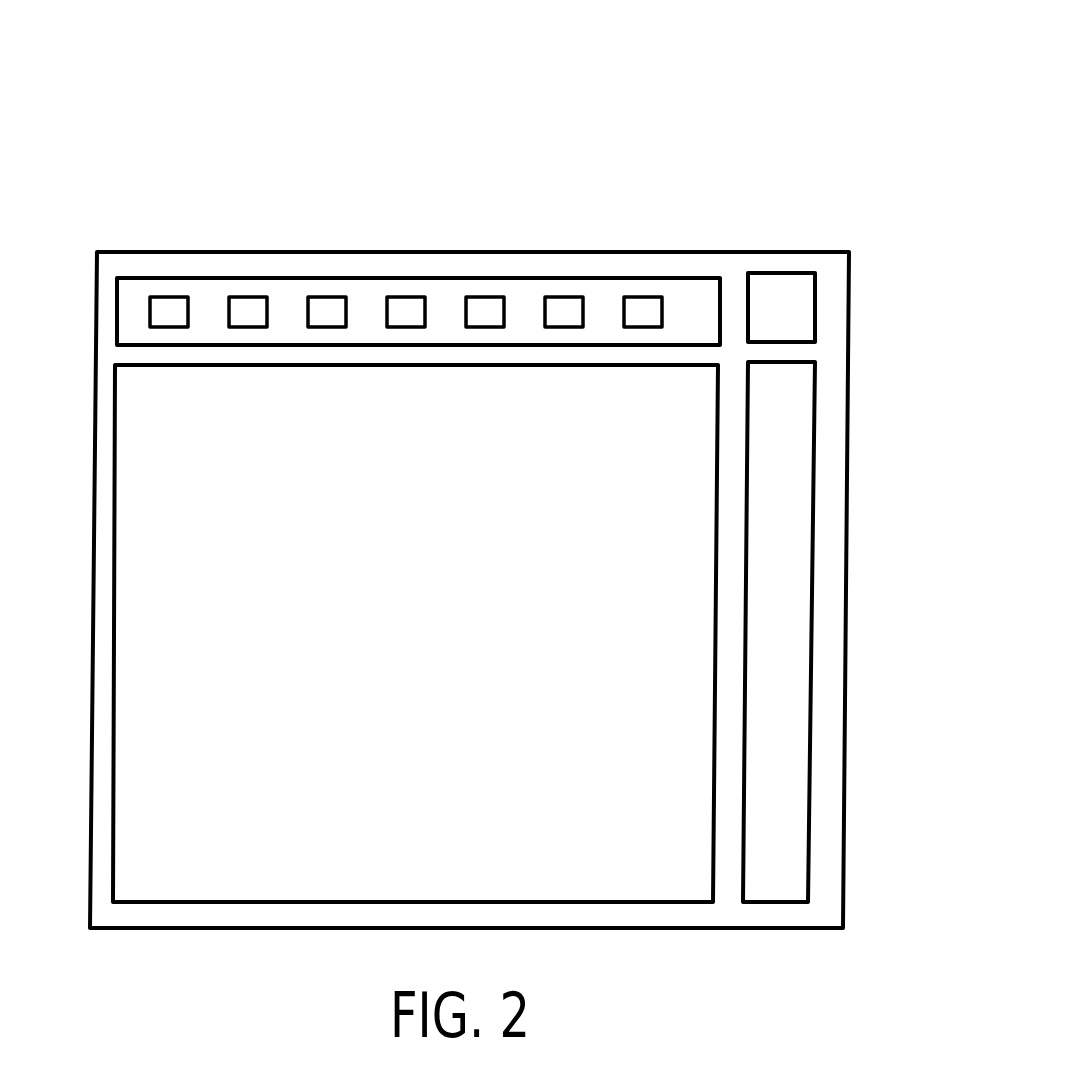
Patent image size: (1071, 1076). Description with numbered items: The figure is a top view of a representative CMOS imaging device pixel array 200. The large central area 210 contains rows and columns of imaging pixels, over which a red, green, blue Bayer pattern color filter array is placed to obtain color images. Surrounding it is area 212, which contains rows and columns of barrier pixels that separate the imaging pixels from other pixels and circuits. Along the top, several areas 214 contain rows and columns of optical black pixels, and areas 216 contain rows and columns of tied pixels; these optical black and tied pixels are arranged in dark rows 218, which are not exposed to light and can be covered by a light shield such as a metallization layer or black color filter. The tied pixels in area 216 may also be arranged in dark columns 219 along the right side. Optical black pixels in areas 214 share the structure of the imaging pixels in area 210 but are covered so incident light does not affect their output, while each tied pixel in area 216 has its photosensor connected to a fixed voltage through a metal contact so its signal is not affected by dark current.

The pixel array 200 is at (674, 100).
The imaging pixel area 210 is at (447, 656).
The barrier pixel area 212 is at (169, 915).
The optical black pixel areas 214 is at (167, 303).
The tied pixel areas 216 is at (687, 282).
The dark rows 218 is at (88, 278).
The dark columns 219 is at (742, 938).